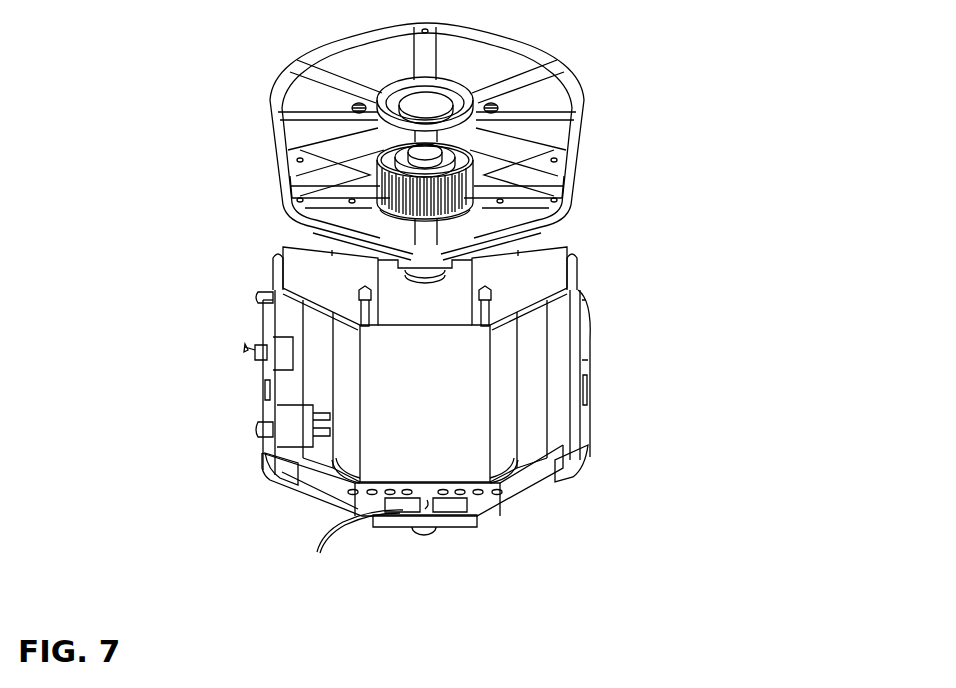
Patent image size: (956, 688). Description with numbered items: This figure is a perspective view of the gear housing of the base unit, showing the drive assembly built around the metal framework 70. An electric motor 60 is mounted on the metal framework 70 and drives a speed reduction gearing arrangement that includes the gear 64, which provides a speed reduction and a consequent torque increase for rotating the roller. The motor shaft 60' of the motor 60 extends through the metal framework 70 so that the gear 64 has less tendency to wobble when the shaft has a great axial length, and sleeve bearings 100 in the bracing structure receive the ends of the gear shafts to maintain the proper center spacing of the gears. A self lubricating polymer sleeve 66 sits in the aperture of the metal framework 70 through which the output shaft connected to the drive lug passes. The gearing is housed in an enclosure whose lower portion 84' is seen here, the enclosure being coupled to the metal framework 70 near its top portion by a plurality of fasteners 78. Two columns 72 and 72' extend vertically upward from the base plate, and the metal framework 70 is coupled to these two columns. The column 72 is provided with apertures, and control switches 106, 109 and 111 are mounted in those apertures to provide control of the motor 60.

The lower portion of housing 84' is at (326, 141).
The fasteners 78 is at (346, 108).
The self lubricating polymer sleeve 66 is at (466, 92).
The motor shaft 60' is at (605, 114).
The sleeve bearings 100 is at (460, 154).
The gear 64 is at (449, 187).
The metal framework 70 is at (548, 273).
The electric motor 60 is at (547, 391).
The column 72 is at (202, 369).
The column 72' is at (676, 368).
The control switch 109 is at (237, 292).
The control switch 106 is at (228, 346).
The control switch 111 is at (240, 430).